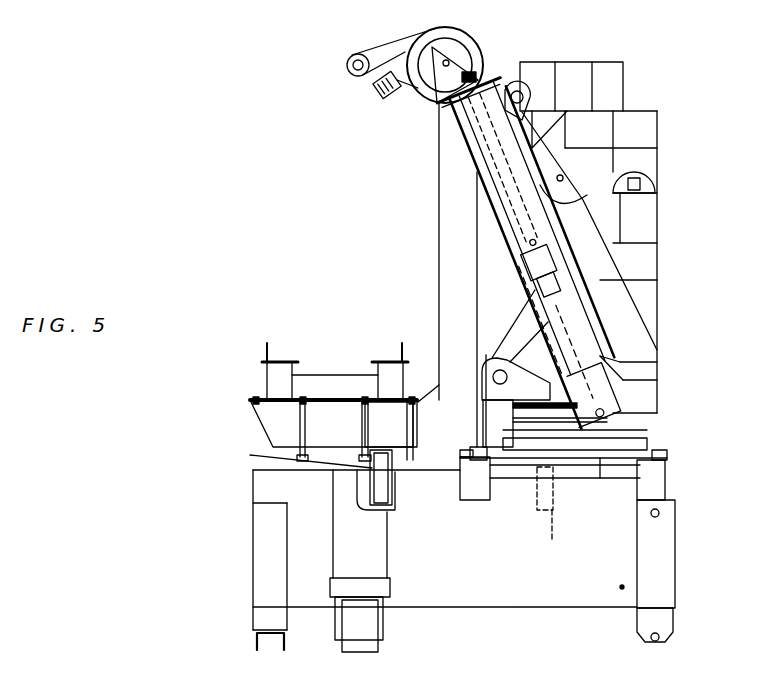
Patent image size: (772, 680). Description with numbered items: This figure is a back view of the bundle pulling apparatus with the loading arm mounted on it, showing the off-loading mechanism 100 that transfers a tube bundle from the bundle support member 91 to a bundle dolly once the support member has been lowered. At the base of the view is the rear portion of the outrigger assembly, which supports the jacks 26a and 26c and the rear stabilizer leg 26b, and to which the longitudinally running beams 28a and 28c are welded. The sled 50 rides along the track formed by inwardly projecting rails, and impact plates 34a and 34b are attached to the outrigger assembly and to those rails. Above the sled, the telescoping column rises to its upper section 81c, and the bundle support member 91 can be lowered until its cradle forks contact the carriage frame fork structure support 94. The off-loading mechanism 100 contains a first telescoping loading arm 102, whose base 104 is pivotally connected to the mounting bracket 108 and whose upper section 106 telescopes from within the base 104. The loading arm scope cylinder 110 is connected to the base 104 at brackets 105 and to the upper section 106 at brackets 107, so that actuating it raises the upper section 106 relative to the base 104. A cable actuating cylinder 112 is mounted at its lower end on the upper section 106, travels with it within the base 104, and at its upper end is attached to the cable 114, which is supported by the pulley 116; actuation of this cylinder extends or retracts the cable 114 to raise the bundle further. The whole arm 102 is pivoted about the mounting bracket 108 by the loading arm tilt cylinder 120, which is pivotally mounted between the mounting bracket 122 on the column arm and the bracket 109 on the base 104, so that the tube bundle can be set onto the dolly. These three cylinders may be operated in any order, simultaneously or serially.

The off-loading mechanism 100 is at (470, 189).
The first telescoping loading arm 102 is at (506, 260).
The base 104 is at (520, 268).
The brackets 105 is at (518, 295).
The upper section 106 is at (620, 367).
The brackets 107 is at (437, 103).
The mounting bracket 108 is at (493, 380).
The bracket 109 is at (513, 84).
The loading arm scope cylinder 110 is at (487, 150).
The cable actuating cylinder 112 is at (528, 333).
The cable 114 is at (393, 45).
The pulley 116 is at (423, 100).
The loading arm tilt cylinder 120 is at (587, 212).
The mounting bracket 122 is at (583, 160).
The upper section 81c is at (620, 67).
The bundle support member 91 is at (317, 375).
The carriage frame fork structure support 94 is at (296, 458).
The longitudinally running beam 28a is at (393, 473).
The longitudinally running beam 28c is at (552, 540).
The impact plate 34a is at (480, 505).
The impact plate 34b is at (665, 472).
The sled 50 is at (599, 478).
The jack 26a is at (256, 637).
The rear stabilizer leg 26b is at (373, 650).
The jack 26c is at (672, 638).